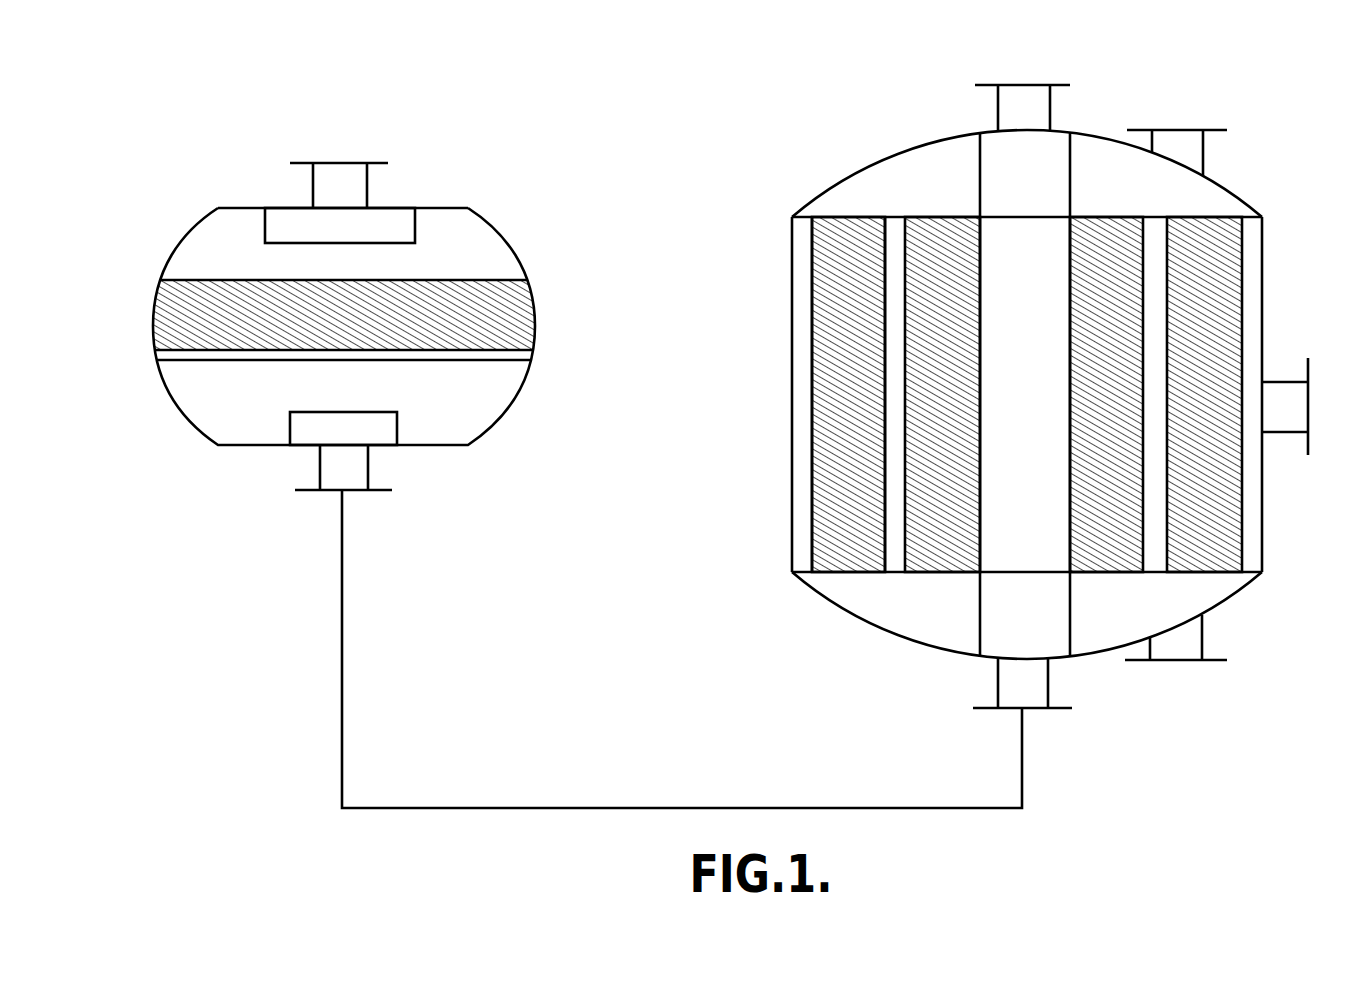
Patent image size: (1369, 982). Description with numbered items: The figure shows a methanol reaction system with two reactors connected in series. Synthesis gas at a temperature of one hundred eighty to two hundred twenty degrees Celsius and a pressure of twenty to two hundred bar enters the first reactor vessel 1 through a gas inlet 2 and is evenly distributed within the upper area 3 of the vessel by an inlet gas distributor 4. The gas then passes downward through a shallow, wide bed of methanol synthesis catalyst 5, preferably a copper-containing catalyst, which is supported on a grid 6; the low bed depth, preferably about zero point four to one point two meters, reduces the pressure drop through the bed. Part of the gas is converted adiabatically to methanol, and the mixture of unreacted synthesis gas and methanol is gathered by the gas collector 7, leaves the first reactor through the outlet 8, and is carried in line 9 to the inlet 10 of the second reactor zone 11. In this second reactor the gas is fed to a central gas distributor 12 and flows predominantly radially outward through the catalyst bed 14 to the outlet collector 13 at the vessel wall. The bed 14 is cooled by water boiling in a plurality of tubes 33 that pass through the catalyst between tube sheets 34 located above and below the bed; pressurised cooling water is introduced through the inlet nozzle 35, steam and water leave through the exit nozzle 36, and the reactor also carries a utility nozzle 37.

The first reactor vessel 1 is at (500, 420).
The gas inlet 2 is at (353, 162).
The upper area 3 is at (460, 257).
The inlet gas distributor 4 is at (288, 228).
The bed of methanol synthesis catalyst 5 is at (480, 322).
The grid 6 is at (160, 363).
The gas collector 7 is at (306, 425).
The outlet 8 is at (370, 465).
The line 9 is at (350, 768).
The inlet 10 is at (1050, 687).
The second reactor zone 11 is at (1248, 205).
The central gas distributor 12 is at (1023, 145).
The outlet collector 13 is at (1288, 387).
The catalyst bed 14 is at (1223, 500).
The tubes 33 is at (898, 217).
The tube sheets 34 is at (1213, 202).
The inlet nozzle 35 is at (1173, 667).
The exit nozzle 36 is at (1175, 130).
The utility nozzle 37 is at (1033, 82).